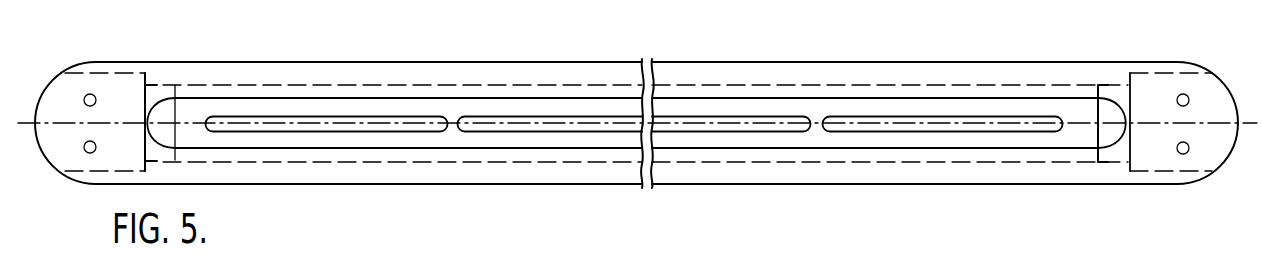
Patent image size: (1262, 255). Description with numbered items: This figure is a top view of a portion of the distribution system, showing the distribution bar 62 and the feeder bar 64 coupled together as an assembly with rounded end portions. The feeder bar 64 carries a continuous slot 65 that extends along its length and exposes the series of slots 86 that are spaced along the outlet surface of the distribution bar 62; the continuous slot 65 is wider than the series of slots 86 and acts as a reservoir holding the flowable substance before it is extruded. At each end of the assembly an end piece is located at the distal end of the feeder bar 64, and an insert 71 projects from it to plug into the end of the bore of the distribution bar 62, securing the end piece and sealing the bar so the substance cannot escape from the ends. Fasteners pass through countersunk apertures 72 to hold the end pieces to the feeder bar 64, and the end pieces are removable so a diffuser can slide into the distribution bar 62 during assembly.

The distribution bar 62 is at (808, 105).
The feeder bar 64 is at (1058, 88).
The continuous slot 65 is at (470, 98).
The insert 71 is at (160, 82).
The countersunk apertures 72 is at (1189, 98).
The series of slots 86 is at (380, 118).